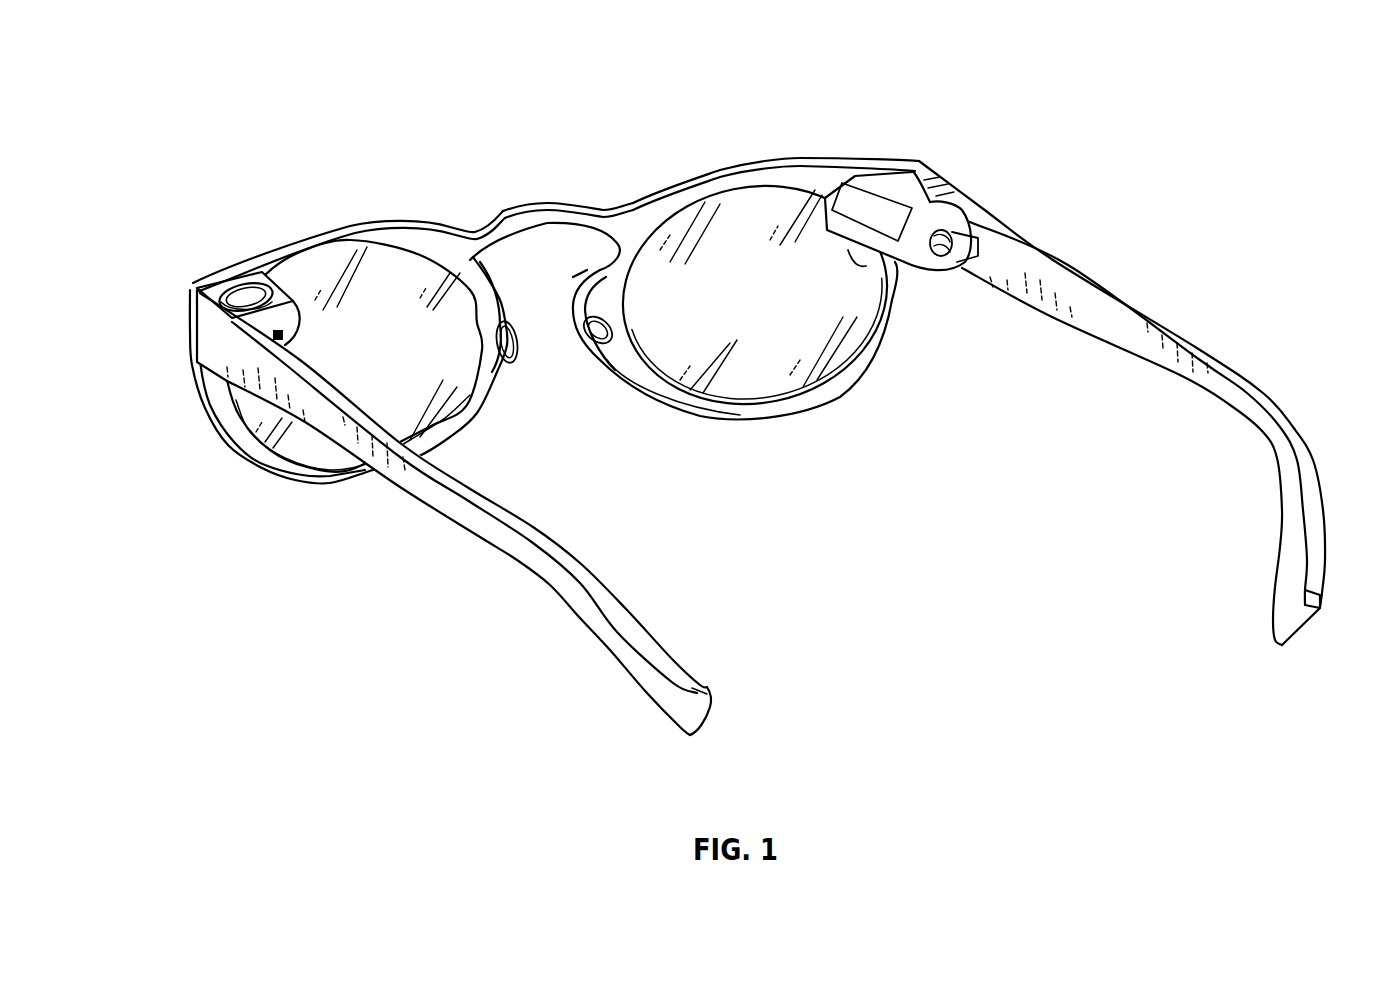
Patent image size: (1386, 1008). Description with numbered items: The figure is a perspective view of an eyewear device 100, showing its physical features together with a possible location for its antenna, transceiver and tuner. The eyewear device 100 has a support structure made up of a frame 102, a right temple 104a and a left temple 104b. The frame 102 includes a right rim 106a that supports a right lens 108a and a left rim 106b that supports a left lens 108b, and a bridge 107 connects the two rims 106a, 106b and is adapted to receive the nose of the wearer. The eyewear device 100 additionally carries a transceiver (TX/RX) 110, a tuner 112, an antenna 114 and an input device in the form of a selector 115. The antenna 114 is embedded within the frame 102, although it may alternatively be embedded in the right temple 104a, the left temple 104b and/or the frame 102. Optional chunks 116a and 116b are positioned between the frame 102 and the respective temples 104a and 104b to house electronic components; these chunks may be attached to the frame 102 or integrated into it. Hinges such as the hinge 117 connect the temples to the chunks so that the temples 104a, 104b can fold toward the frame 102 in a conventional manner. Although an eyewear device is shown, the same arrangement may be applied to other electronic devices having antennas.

The eyewear device 100 is at (248, 97).
The frame 102 is at (398, 221).
The right temple 104a is at (1110, 336).
The left temple 104b is at (450, 500).
The right rim 106a is at (801, 401).
The left rim 106b is at (306, 487).
The bridge 107 is at (551, 200).
The right lens 108a is at (799, 365).
The left lens 108b is at (448, 338).
The transceiver (TX/RX) 110 is at (889, 197).
The tuner 112 is at (840, 213).
The antenna 114 is at (710, 167).
The selector 115 is at (232, 283).
The chunk 116a is at (855, 251).
The chunk 116b is at (236, 289).
The hinge 117 is at (970, 266).